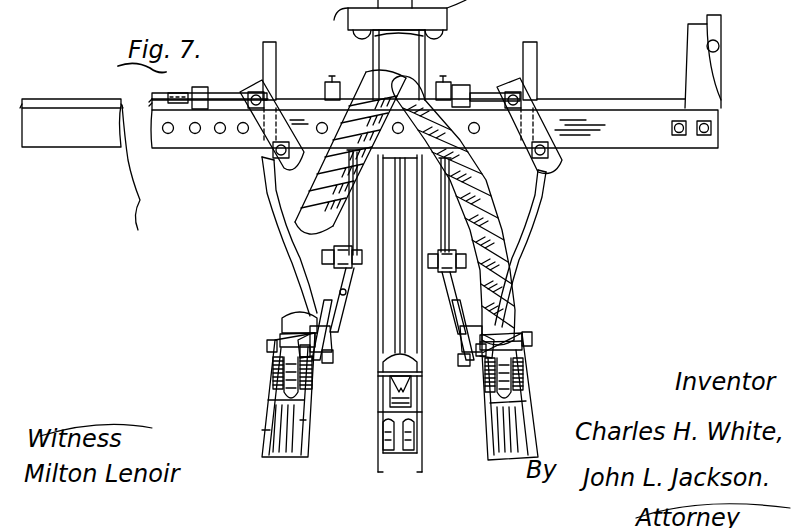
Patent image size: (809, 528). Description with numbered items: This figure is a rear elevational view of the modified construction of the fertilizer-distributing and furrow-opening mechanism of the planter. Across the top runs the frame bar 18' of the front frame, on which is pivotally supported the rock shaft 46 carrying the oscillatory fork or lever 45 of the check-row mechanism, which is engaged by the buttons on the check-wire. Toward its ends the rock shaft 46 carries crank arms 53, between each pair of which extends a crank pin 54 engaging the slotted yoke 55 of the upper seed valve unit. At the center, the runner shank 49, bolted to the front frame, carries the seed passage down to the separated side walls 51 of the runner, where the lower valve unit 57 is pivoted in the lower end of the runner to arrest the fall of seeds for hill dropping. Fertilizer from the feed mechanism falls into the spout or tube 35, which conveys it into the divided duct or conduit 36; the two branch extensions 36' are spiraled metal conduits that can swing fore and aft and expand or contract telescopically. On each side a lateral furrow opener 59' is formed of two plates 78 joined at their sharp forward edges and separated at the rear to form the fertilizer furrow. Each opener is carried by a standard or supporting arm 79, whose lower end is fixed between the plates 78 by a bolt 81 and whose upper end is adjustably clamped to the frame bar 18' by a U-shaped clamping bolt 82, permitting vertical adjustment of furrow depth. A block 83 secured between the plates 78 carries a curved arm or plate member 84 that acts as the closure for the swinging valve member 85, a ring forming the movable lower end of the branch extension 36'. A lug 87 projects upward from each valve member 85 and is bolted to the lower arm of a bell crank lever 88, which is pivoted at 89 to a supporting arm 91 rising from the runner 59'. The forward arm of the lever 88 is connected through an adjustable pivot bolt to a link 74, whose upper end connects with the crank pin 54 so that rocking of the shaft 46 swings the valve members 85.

The frame bar 18' is at (423, 147).
The spout or tube 35 is at (390, 33).
The divided duct or conduit 36 is at (405, 190).
The branch extension 36' is at (406, 256).
The oscillatory fork or lever 45 is at (721, 20).
The rock shaft 46 is at (78, 94).
The runner shank 49 is at (380, 290).
The side walls 51 is at (378, 462).
The crank arms 53 is at (466, 92).
The crank pin 54 is at (312, 78).
The slotted yoke 55 is at (207, 91).
The lower valve unit 57 is at (392, 405).
The lateral furrow opener 59' is at (403, 405).
The link 74 is at (347, 208).
The plates 78 is at (268, 460).
The standard or supporting arm 79 is at (265, 180).
The bolt 81 is at (328, 365).
The U-shaped clamping bolt 82 is at (256, 108).
The block 83 is at (282, 390).
The curved arm or plate member 84 is at (284, 360).
The swinging valve member 85 is at (282, 338).
The lug 87 is at (332, 340).
The bell crank lever 88 is at (334, 306).
The pivot 89 is at (322, 258).
The supporting arm 91 is at (332, 276).